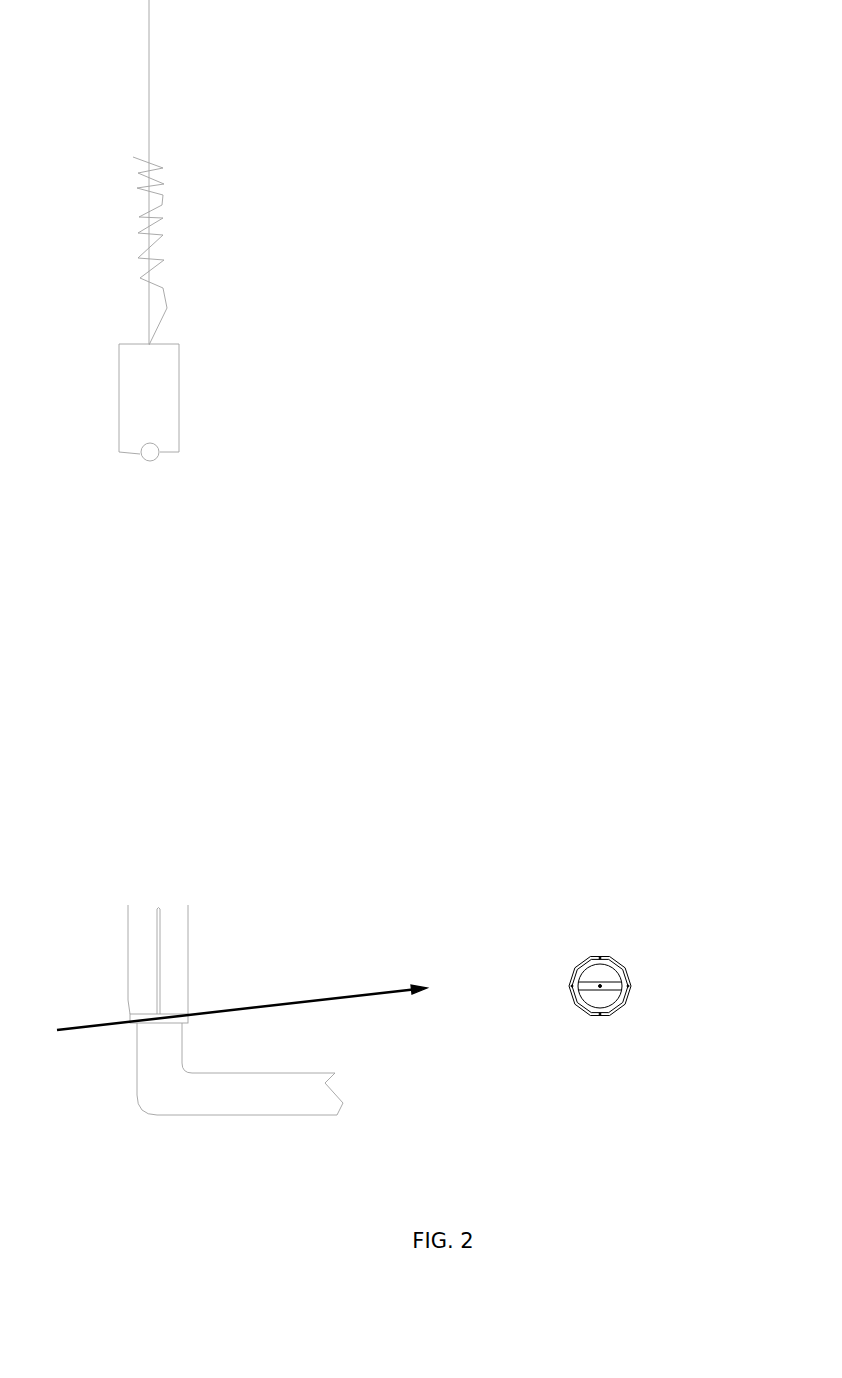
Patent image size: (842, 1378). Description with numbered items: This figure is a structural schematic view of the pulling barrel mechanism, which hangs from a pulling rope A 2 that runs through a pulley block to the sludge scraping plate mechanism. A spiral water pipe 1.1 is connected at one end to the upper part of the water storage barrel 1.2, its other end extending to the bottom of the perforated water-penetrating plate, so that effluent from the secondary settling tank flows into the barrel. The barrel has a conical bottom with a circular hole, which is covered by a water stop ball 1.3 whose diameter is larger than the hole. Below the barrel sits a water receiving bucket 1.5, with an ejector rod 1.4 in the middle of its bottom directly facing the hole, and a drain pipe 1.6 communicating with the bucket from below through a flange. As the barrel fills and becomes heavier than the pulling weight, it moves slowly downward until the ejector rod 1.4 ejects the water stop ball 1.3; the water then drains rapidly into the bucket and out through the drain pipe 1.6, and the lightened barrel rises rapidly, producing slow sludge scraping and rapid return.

The pulling rope A 2 is at (434, 78).
The spiral water pipe 1.1 is at (449, 265).
The water storage barrel 1.2 is at (442, 433).
The water stop ball 1.3 is at (453, 552).
The ejector rod 1.4 is at (245, 915).
The water receiving bucket 1.5 is at (223, 964).
The drain pipe 1.6 is at (251, 1048).